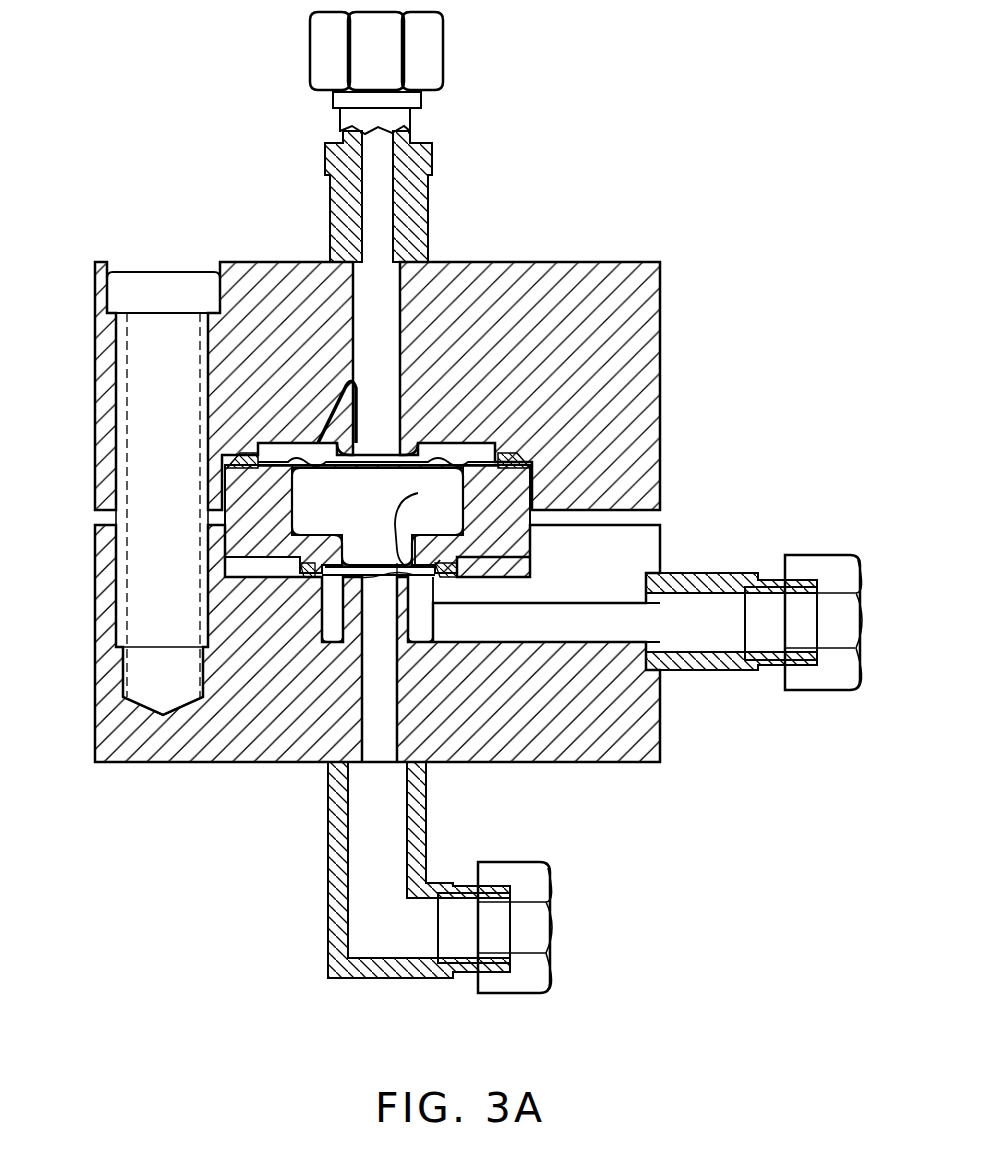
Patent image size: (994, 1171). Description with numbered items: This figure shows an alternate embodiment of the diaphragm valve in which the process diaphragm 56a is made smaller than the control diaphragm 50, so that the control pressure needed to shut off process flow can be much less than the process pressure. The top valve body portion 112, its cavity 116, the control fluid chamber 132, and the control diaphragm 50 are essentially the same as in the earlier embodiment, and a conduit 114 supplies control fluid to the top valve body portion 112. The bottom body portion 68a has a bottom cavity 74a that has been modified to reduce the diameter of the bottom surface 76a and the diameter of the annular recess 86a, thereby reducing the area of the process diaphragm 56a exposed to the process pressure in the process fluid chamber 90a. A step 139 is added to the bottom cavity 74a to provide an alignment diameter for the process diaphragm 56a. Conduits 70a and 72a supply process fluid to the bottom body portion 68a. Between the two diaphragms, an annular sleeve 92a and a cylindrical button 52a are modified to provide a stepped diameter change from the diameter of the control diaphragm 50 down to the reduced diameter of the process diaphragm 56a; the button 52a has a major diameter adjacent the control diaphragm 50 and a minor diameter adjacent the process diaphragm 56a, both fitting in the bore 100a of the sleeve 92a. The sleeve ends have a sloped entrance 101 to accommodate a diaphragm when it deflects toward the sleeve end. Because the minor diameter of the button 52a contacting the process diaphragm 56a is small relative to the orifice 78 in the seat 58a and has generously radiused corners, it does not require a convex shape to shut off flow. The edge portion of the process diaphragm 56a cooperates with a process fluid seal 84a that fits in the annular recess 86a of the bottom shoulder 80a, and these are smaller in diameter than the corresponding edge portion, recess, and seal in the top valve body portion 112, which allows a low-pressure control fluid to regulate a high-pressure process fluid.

The top valve body portion 112 is at (660, 288).
The bottom body portion 68a is at (640, 762).
The cavity 116 is at (222, 480).
The conduit 114 is at (380, 218).
The control fluid chamber 132 is at (290, 445).
The control diaphragm 50 is at (265, 470).
The bore 100a is at (262, 470).
The sloped entrance 101 is at (240, 463).
The button 52a is at (400, 498).
The bottom cavity 74a is at (300, 555).
The process fluid seal 84a is at (320, 572).
The annular recess 86a is at (332, 578).
The annular sleeve 92a is at (545, 518).
The conduit 70a is at (610, 625).
The conduit 72a is at (340, 875).
The orifice 78 is at (426, 815).
The process diaphragm 56a is at (335, 620).
The bottom surface 76a is at (345, 640).
The process fluid chamber 90a is at (392, 600).
The seat 58a is at (400, 590).
The bottom shoulder 80a is at (450, 600).
The step 139 is at (495, 570).